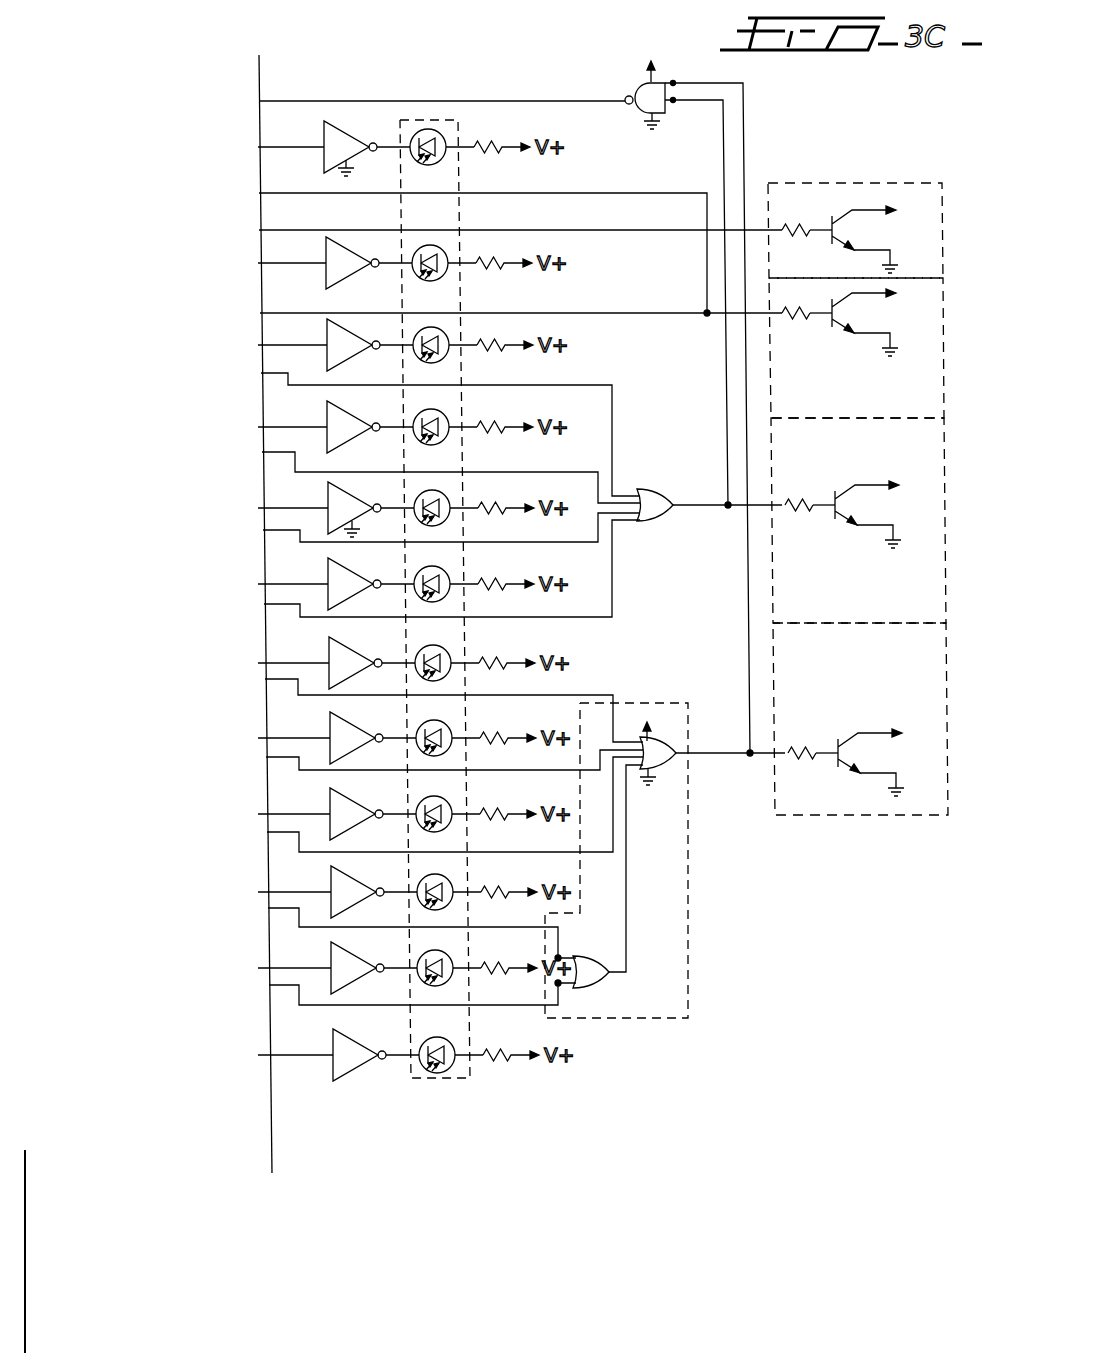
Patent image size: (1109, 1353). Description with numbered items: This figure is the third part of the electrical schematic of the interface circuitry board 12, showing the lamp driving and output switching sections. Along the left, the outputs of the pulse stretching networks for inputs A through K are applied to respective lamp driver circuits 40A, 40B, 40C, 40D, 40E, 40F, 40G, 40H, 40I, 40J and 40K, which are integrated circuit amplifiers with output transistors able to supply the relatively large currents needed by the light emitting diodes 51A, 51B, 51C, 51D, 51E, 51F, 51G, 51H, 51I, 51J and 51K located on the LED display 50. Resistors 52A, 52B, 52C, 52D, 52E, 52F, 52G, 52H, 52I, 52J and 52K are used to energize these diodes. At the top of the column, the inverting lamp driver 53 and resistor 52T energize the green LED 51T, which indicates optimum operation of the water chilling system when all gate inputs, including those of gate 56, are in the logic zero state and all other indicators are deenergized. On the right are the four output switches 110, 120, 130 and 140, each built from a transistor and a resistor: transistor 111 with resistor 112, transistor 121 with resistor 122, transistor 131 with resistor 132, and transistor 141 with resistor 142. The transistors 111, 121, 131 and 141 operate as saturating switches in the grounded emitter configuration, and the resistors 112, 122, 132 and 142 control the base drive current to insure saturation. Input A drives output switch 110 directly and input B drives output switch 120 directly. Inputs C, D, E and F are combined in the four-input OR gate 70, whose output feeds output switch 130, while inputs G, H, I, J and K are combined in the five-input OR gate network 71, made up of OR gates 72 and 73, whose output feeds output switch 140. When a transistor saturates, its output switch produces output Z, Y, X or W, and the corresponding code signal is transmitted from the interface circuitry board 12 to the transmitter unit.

The interface circuitry board 12 is at (628, 1175).
The LED display 50 is at (418, 118).
The inverting lamp driver 53 is at (350, 148).
The green LED 51T is at (442, 159).
The resistor 52T is at (487, 144).
The gate 56 is at (647, 84).
The lamp driver circuit 40A is at (325, 257).
The lamp driver circuit 40B is at (325, 339).
The lamp driver circuit 40C is at (325, 421).
The lamp driver circuit 40D is at (325, 502).
The lamp driver circuit 40E is at (325, 578).
The lamp driver circuit 40F is at (325, 657).
The lamp driver circuit 40G is at (325, 732).
The lamp driver circuit 40H is at (325, 808).
The lamp driver circuit 40I is at (325, 886).
The lamp driver circuit 40J is at (325, 962).
The lamp driver circuit 40K is at (325, 1049).
The light emitting diode 51A is at (444, 275).
The light emitting diode 51B is at (445, 357).
The light emitting diode 51C is at (445, 439).
The light emitting diode 51D is at (446, 520).
The light emitting diode 51E is at (446, 596).
The light emitting diode 51F is at (447, 675).
The light emitting diode 51G is at (448, 750).
The light emitting diode 51H is at (448, 826).
The light emitting diode 51I is at (449, 904).
The light emitting diode 51J is at (449, 980).
The light emitting diode 51K is at (453, 1066).
The resistor 52A is at (498, 262).
The resistor 52B is at (489, 343).
The resistor 52C is at (492, 426).
The resistor 52D is at (483, 505).
The resistor 52E is at (489, 581).
The resistor 52F is at (491, 656).
The resistor 52G is at (490, 733).
The resistor 52H is at (490, 808).
The resistor 52I is at (494, 887).
The resistor 52J is at (486, 962).
The resistor 52K is at (496, 1050).
The 4-input OR gate 70 is at (655, 505).
The five-input OR gate network 71 is at (690, 912).
The OR gate 72 is at (659, 743).
The OR gate 73 is at (591, 972).
The output switch 110 is at (945, 218).
The transistor 111 is at (865, 239).
The resistor 112 is at (797, 225).
The output switch 120 is at (945, 320).
The transistor 121 is at (865, 322).
The resistor 122 is at (798, 311).
The output switch 130 is at (948, 490).
The transistor 131 is at (868, 514).
The resistor 132 is at (804, 502).
The output switch 140 is at (950, 740).
The transistor 141 is at (871, 762).
The resistor 142 is at (804, 751).